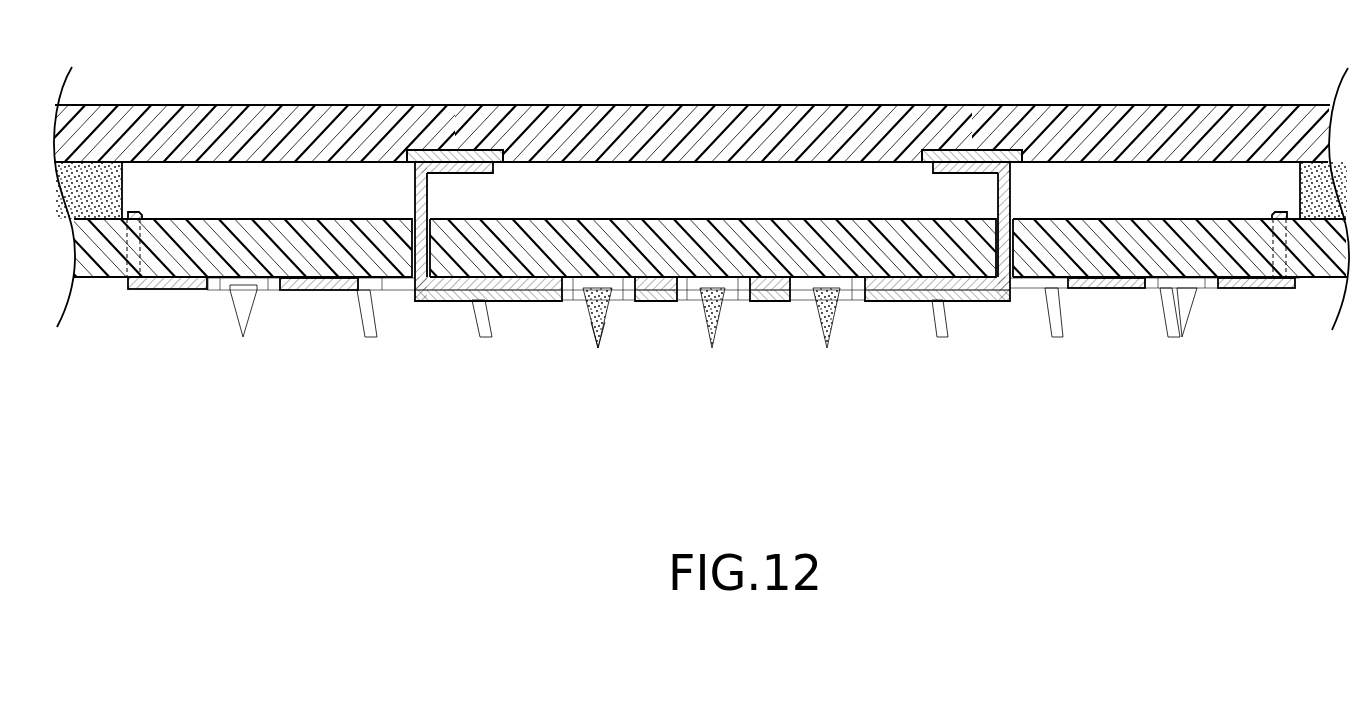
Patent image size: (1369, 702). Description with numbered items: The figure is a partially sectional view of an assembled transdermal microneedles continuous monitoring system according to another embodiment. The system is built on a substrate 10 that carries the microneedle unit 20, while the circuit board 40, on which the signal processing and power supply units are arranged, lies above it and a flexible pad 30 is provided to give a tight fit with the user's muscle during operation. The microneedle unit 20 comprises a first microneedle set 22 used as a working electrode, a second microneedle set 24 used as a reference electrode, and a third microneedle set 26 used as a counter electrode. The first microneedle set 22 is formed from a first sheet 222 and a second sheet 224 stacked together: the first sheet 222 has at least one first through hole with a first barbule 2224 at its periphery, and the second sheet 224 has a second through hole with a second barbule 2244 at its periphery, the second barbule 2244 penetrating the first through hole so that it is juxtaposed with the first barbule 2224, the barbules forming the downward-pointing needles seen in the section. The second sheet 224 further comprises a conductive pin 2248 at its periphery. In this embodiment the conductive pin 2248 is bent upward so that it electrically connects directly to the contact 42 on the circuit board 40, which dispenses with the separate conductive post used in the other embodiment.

The substrate 10 is at (1113, 245).
The microneedle unit 20 is at (712, 258).
The first microneedle set 22 is at (712, 258).
The first sheet 222 is at (445, 413).
The second sheet 224 is at (455, 283).
The first barbule 2224 is at (597, 310).
The second barbule 2244 is at (603, 334).
The conductive pin 2248 is at (940, 171).
The second microneedle set 24 is at (177, 280).
The third microneedle set 26 is at (1252, 284).
The flexible pad 30 is at (1313, 188).
The circuit board 40 is at (642, 130).
The contact 42 is at (982, 157).